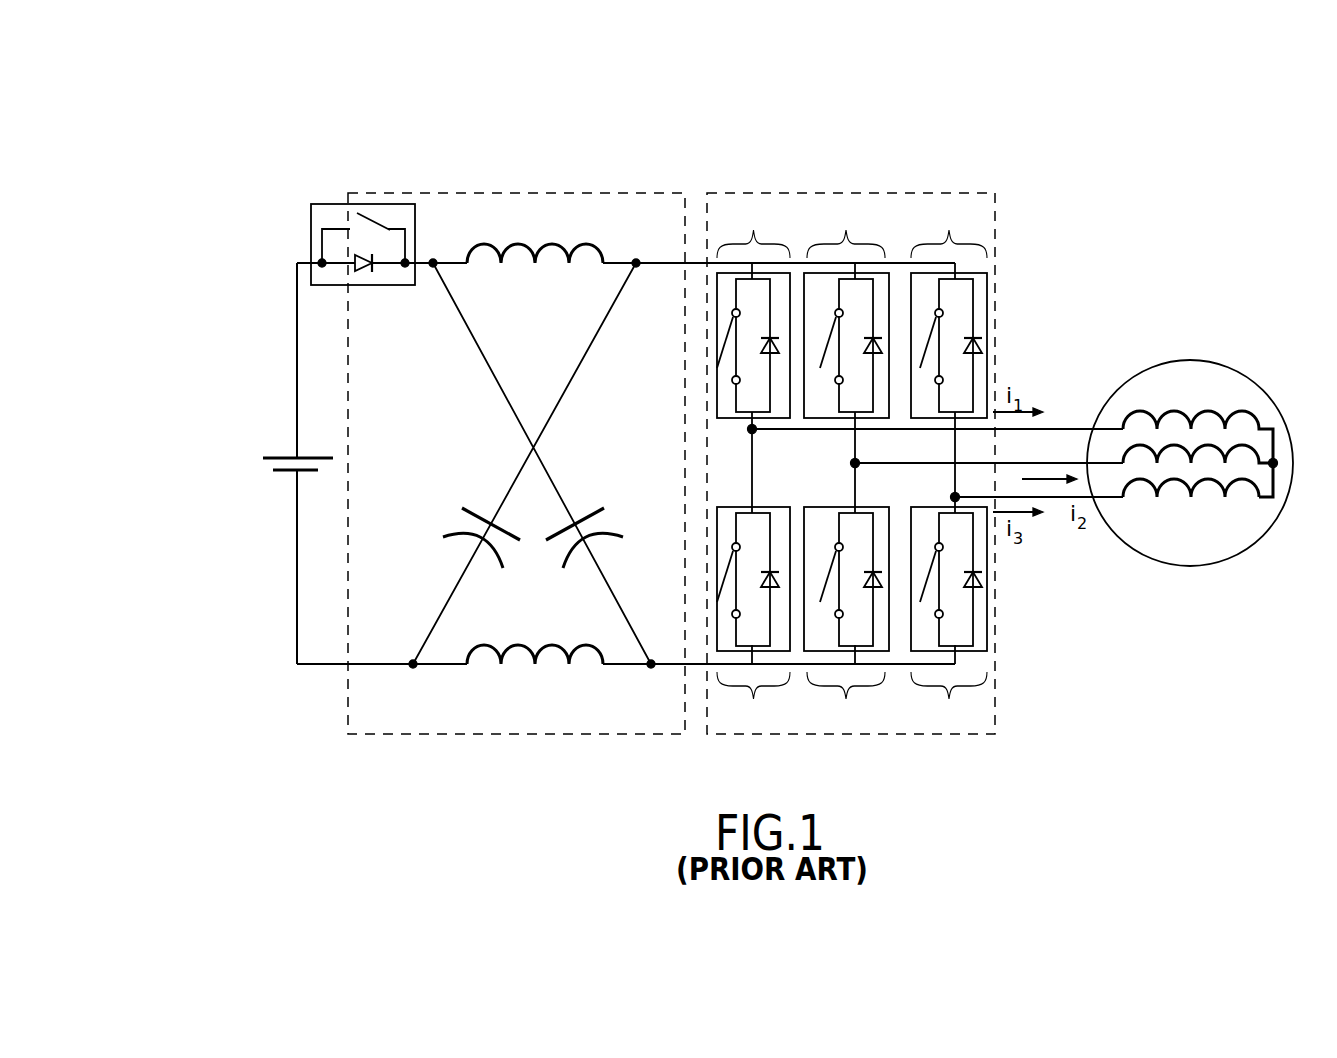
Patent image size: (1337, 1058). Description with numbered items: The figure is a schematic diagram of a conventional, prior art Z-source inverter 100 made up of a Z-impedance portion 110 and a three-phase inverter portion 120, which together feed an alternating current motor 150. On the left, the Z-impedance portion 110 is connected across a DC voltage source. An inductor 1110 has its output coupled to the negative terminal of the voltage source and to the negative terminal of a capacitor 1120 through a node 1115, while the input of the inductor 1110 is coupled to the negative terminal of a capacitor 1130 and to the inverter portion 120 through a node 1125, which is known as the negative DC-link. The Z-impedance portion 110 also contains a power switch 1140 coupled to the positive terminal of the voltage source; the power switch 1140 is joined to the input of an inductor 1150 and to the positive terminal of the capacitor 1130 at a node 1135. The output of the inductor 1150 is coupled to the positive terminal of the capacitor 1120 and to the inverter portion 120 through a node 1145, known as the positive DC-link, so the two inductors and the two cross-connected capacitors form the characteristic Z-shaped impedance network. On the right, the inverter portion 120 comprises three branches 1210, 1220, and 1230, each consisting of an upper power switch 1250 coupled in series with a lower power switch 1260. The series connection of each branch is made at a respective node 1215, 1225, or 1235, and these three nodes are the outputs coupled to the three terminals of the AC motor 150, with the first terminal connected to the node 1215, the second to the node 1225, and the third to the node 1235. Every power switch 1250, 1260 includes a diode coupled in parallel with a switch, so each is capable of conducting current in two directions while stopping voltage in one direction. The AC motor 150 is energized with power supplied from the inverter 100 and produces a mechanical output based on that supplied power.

The Z-source inverter 100 is at (927, 122).
The Z-impedance portion 110 is at (334, 204).
The three-phase inverter portion 120 is at (995, 193).
The AC motor 150 is at (1204, 552).
The inductor 1110 is at (525, 664).
The node 1115 is at (413, 664).
The capacitor 1120 is at (478, 512).
The node 1125 is at (651, 664).
The capacitor 1130 is at (595, 510).
The node 1135 is at (433, 263).
The power switch 1140 is at (367, 285).
The node 1145 is at (636, 263).
The inductor 1150 is at (553, 245).
The branch 1210 is at (753, 466).
The node 1215 is at (752, 429).
The branch 1220 is at (846, 466).
The node 1225 is at (855, 463).
The branch 1230 is at (949, 466).
The node 1235 is at (955, 497).
The upper power switch 1250 is at (889, 273).
The lower power switch 1260 is at (987, 618).